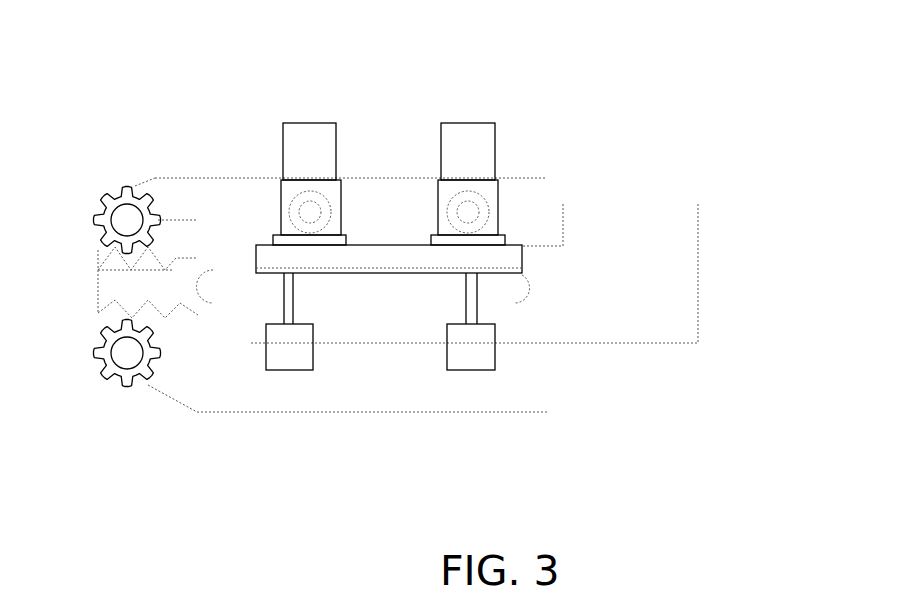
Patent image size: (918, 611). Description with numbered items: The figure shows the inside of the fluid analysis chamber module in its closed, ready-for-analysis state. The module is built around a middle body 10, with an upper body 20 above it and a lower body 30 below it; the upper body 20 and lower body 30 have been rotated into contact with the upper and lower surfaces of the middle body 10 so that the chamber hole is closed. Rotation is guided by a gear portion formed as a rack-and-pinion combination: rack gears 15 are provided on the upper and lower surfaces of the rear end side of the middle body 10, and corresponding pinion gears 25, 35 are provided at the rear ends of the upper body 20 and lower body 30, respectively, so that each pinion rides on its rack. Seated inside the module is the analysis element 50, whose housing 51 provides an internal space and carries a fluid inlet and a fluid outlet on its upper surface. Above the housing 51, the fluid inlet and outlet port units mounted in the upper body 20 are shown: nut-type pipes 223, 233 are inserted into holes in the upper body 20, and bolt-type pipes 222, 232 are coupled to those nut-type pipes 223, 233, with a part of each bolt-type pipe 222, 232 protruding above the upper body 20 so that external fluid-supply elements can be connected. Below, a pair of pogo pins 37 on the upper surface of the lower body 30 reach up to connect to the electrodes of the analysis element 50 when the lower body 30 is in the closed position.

The middle body 10 is at (712, 278).
The rack gears 15 is at (104, 251).
The upper body 20 is at (118, 155).
The pinion gear 25 is at (93, 216).
The lower body 30 is at (117, 420).
The pinion gear 35 is at (93, 353).
The pogo pins 37 is at (470, 371).
The analysis element 50 is at (395, 173).
The housing 51 is at (522, 258).
The bolt-type pipe 222 is at (468, 123).
The nut-type pipe 223 is at (499, 196).
The bolt-type pipe 232 is at (312, 123).
The nut-type pipe 233 is at (280, 197).